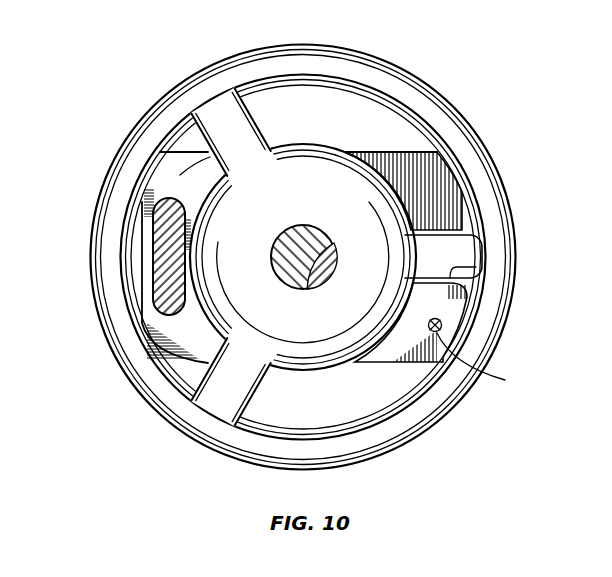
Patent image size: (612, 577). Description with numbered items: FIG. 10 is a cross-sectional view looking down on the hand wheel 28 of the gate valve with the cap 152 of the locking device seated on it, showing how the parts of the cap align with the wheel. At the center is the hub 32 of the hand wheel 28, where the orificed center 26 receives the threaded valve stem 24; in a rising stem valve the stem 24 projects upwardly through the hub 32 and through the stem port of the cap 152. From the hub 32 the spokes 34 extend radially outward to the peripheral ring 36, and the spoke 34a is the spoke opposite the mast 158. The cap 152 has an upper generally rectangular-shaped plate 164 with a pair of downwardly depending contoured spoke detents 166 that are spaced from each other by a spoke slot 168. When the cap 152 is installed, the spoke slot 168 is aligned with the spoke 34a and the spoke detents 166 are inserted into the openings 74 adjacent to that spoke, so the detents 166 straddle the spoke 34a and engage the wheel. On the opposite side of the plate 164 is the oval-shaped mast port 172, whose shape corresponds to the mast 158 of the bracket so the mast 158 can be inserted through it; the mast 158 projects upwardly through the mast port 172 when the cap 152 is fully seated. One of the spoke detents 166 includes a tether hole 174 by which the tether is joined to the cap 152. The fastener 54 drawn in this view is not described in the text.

The hand wheel 28 is at (147, 74).
The spokes 34 is at (225, 118).
The cap 152 is at (376, 148).
The peripheral ring 36 is at (474, 128).
The openings 74 is at (292, 110).
The plate 164 is at (178, 173).
The spoke detents 166 is at (454, 192).
The mast port 172 is at (190, 230).
The valve stem 24 is at (305, 226).
The orificed center 26 is at (336, 251).
The spoke 34a is at (474, 250).
The spoke slot 168 is at (485, 268).
The mast 158 is at (170, 283).
The hub 32 is at (290, 324).
The fastener 54 is at (443, 325).
The tether hole 174 is at (491, 361).